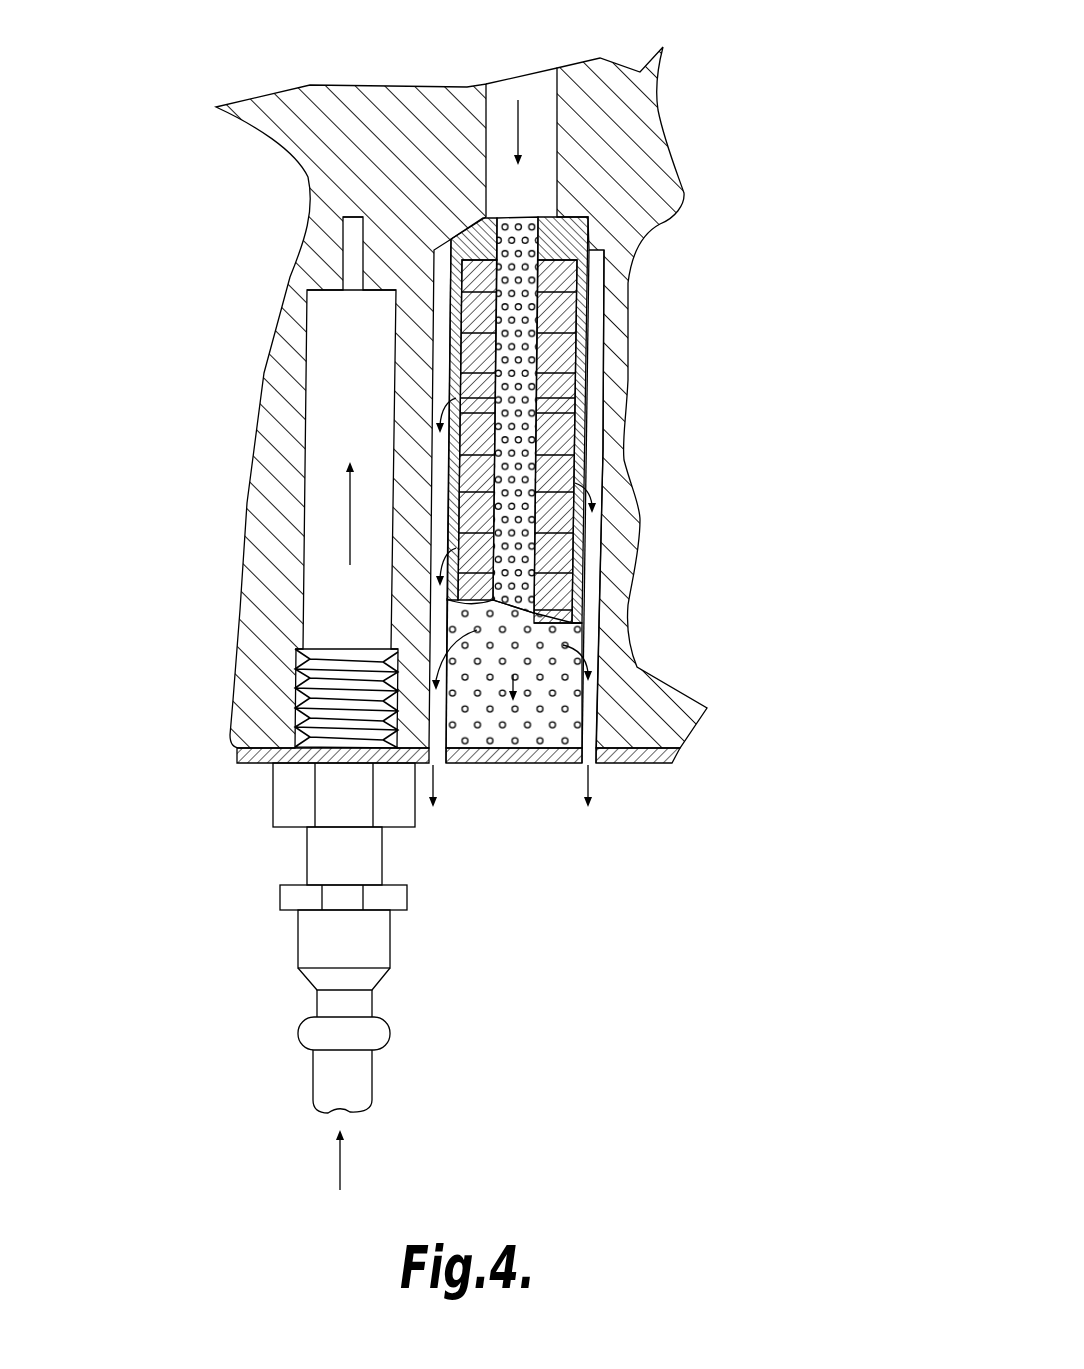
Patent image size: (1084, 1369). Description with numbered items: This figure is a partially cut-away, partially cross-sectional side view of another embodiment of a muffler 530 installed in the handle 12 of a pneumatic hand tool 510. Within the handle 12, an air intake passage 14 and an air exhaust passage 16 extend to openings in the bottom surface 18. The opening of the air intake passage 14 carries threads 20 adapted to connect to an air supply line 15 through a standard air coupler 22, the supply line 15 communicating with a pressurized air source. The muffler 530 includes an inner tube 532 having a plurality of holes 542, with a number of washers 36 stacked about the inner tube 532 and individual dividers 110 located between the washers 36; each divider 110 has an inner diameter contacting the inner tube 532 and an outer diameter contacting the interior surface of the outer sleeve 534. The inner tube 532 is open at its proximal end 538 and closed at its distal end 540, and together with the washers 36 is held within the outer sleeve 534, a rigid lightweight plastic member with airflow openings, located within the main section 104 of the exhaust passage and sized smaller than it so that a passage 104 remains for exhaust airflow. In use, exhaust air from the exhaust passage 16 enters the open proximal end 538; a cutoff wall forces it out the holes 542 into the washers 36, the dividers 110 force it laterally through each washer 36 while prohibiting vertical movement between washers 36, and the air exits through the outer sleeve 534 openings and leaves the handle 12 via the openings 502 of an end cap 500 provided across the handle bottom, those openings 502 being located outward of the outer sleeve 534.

The tool 510 is at (700, 55).
The muffler 530 is at (635, 439).
The air exhaust passage 16 is at (543, 83).
The proximal end 538 is at (515, 213).
The handle 12 is at (294, 284).
The air intake passage 14 is at (343, 355).
The threads 20 is at (300, 680).
The air coupler 22 is at (312, 945).
The air supply line 15 is at (325, 1075).
The main section of the exhaust passage 104 is at (598, 324).
The holes 542 is at (580, 397).
The inner tube 532 is at (522, 440).
The dividers 110 is at (548, 452).
The outer sleeve 534 is at (565, 545).
The washers 36 is at (578, 602).
The bottom surface 18 is at (675, 756).
The distal end 540 is at (474, 755).
The end cap 500 is at (543, 755).
The openings 502 is at (592, 765).